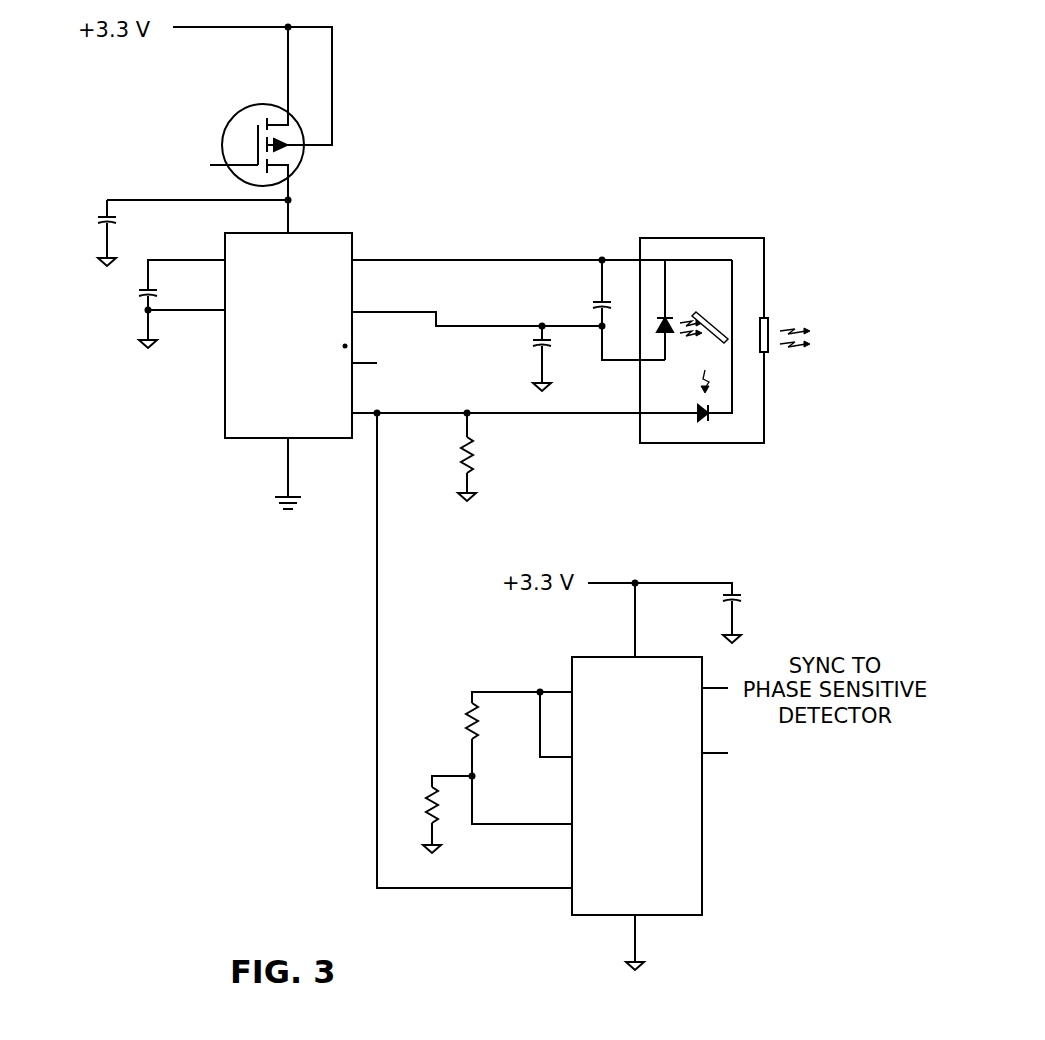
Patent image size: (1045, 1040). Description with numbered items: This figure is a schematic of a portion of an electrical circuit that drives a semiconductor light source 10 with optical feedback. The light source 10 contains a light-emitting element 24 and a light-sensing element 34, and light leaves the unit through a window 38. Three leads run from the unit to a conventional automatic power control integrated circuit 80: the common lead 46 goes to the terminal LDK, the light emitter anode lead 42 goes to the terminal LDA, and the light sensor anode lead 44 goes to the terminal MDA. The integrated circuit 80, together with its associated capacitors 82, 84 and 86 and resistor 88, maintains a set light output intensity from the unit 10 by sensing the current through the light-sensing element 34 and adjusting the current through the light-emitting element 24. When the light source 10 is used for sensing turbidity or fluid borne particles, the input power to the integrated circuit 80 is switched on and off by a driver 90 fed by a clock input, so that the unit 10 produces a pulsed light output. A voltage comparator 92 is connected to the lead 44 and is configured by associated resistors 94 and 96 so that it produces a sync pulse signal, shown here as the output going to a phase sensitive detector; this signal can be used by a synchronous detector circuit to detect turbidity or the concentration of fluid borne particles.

The semiconductor light source 10 is at (695, 238).
The light-emitting element 24 is at (668, 312).
The light-sensing element 34 is at (698, 417).
The window 38 is at (767, 328).
The light emitter anode lead 42 is at (627, 358).
The light sensor anode lead 44 is at (597, 415).
The common lead 46 is at (622, 258).
The automatic power control integrated circuit 80 is at (328, 240).
The capacitor 82 is at (143, 297).
The capacitor 84 is at (590, 307).
The capacitor 86 is at (530, 343).
The resistor 88 is at (475, 455).
The driver 90 is at (238, 132).
The voltage comparator 92 is at (677, 825).
The resistor 94 is at (462, 717).
The resistor 96 is at (422, 813).